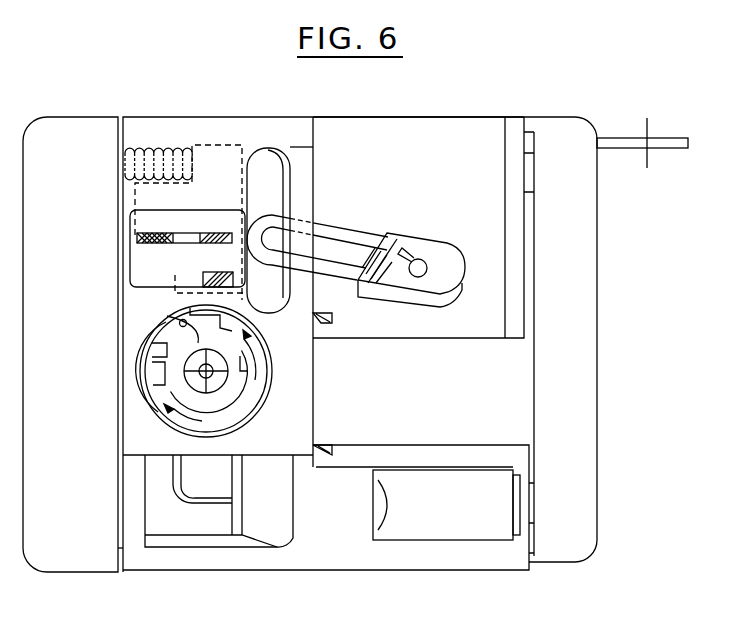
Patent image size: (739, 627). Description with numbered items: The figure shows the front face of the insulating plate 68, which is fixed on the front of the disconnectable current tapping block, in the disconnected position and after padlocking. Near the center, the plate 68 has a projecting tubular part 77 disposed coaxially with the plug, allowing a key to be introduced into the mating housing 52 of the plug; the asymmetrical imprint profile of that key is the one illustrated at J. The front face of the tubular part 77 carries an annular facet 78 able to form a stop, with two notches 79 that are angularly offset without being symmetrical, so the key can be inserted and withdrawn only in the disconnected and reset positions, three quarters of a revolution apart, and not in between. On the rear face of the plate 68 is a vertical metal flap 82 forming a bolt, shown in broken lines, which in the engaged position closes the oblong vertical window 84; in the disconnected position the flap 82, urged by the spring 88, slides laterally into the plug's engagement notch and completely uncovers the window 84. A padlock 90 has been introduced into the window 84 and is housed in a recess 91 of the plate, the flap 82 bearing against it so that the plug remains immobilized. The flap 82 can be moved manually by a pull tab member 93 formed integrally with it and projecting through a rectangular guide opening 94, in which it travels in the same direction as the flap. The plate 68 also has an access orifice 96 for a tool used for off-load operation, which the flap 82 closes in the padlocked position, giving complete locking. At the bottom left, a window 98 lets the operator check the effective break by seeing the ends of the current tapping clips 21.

The insulating plate 68 is at (500, 116).
The spring 88 is at (157, 148).
The vertical metal flap 82 is at (219, 160).
The oblong vertical window 84 is at (272, 165).
The recess 91 is at (456, 143).
The padlock 90 is at (423, 250).
The pull tab member 93 is at (137, 237).
The rectangular guide opening 94 is at (182, 240).
The access orifice 96 is at (208, 272).
The notches 79 is at (157, 367).
The asymmetrical imprint profile J is at (262, 361).
The housing 52 is at (243, 382).
The annular facet 78 is at (253, 404).
The projecting tubular part 77 is at (229, 433).
The current tapping clips 21 is at (220, 492).
The window 98 is at (200, 523).